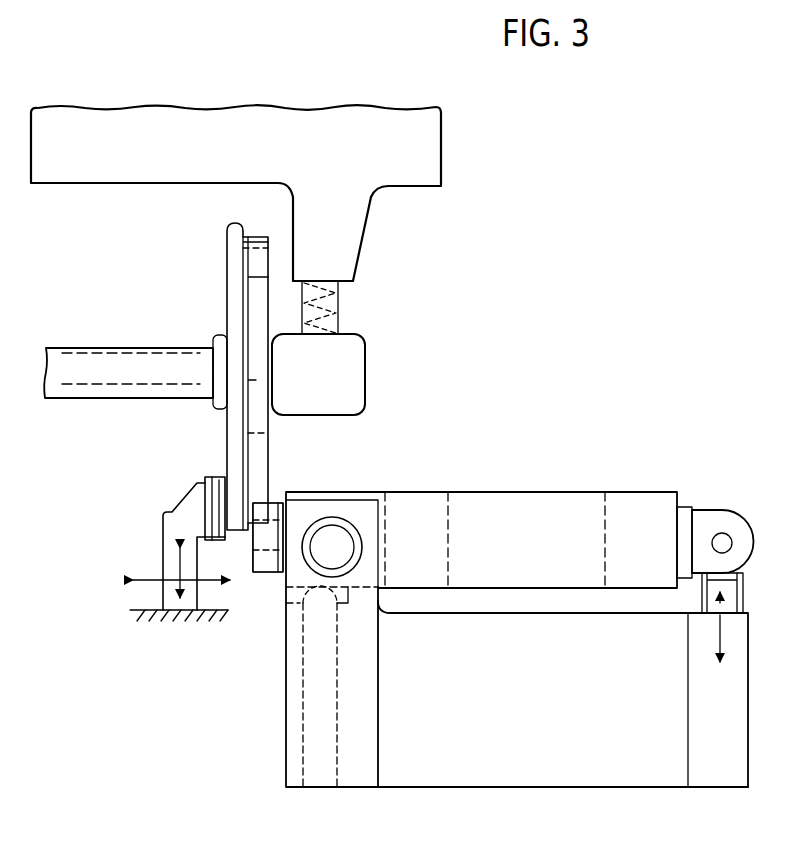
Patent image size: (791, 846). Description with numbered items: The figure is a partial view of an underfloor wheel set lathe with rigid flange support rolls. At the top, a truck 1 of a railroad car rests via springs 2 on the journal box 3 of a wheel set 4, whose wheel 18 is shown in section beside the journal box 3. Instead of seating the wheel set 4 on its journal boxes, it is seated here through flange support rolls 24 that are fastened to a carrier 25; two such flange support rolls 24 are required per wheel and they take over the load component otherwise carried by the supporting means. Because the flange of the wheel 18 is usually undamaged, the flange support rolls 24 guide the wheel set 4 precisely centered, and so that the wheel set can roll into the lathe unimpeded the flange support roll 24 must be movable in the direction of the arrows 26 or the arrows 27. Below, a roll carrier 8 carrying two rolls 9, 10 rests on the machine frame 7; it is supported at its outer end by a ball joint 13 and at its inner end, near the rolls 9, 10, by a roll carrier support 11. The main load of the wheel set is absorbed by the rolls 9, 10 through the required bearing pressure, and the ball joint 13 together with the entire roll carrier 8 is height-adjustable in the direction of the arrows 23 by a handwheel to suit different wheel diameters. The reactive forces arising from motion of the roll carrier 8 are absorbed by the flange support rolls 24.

The truck 1 is at (433, 161).
The springs 2 is at (343, 310).
The journal box 3 is at (327, 388).
The wheel set 4 is at (125, 338).
The machine frame 7 is at (518, 729).
The roll carrier 8 is at (638, 517).
The roll 9 is at (272, 572).
The roll 10 is at (268, 537).
The roll carrier support 11 is at (306, 702).
The ball joint 13 is at (722, 533).
The wheel 18 is at (235, 417).
The arrows 23 is at (719, 636).
The flange support roll 24 is at (166, 510).
The carrier 25 is at (196, 494).
The arrows 26 is at (176, 562).
The arrows 27 is at (156, 586).